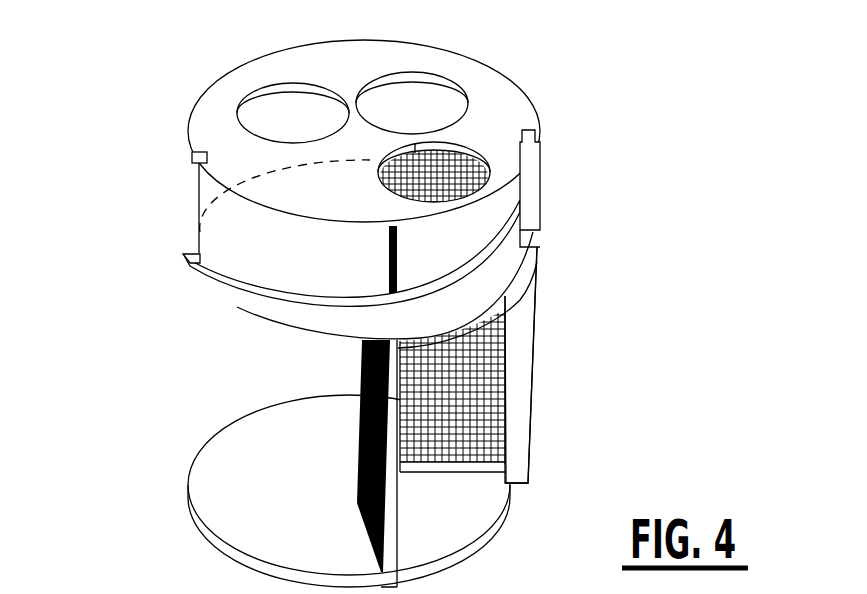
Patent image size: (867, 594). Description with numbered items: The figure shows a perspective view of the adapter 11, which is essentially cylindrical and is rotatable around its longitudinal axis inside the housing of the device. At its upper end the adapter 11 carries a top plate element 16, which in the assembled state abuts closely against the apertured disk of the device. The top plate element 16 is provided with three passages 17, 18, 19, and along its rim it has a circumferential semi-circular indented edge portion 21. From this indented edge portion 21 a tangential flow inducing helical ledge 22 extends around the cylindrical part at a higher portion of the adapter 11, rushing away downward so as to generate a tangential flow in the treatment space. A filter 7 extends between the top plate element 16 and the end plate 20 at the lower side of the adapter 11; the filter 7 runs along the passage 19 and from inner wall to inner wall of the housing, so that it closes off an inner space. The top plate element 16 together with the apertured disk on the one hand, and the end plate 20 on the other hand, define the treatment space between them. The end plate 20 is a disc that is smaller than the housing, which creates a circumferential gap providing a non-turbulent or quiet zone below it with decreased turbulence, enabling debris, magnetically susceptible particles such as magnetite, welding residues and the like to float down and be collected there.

The adapter 11 is at (381, 293).
The top plate element 16 is at (507, 108).
The passage 17 is at (262, 117).
The passage 18 is at (392, 97).
The passage 19 is at (420, 183).
The end plate 20 is at (232, 477).
The indented edge portion 21 is at (220, 183).
The helical ledge 22 is at (183, 255).
The filter 7 is at (377, 378).